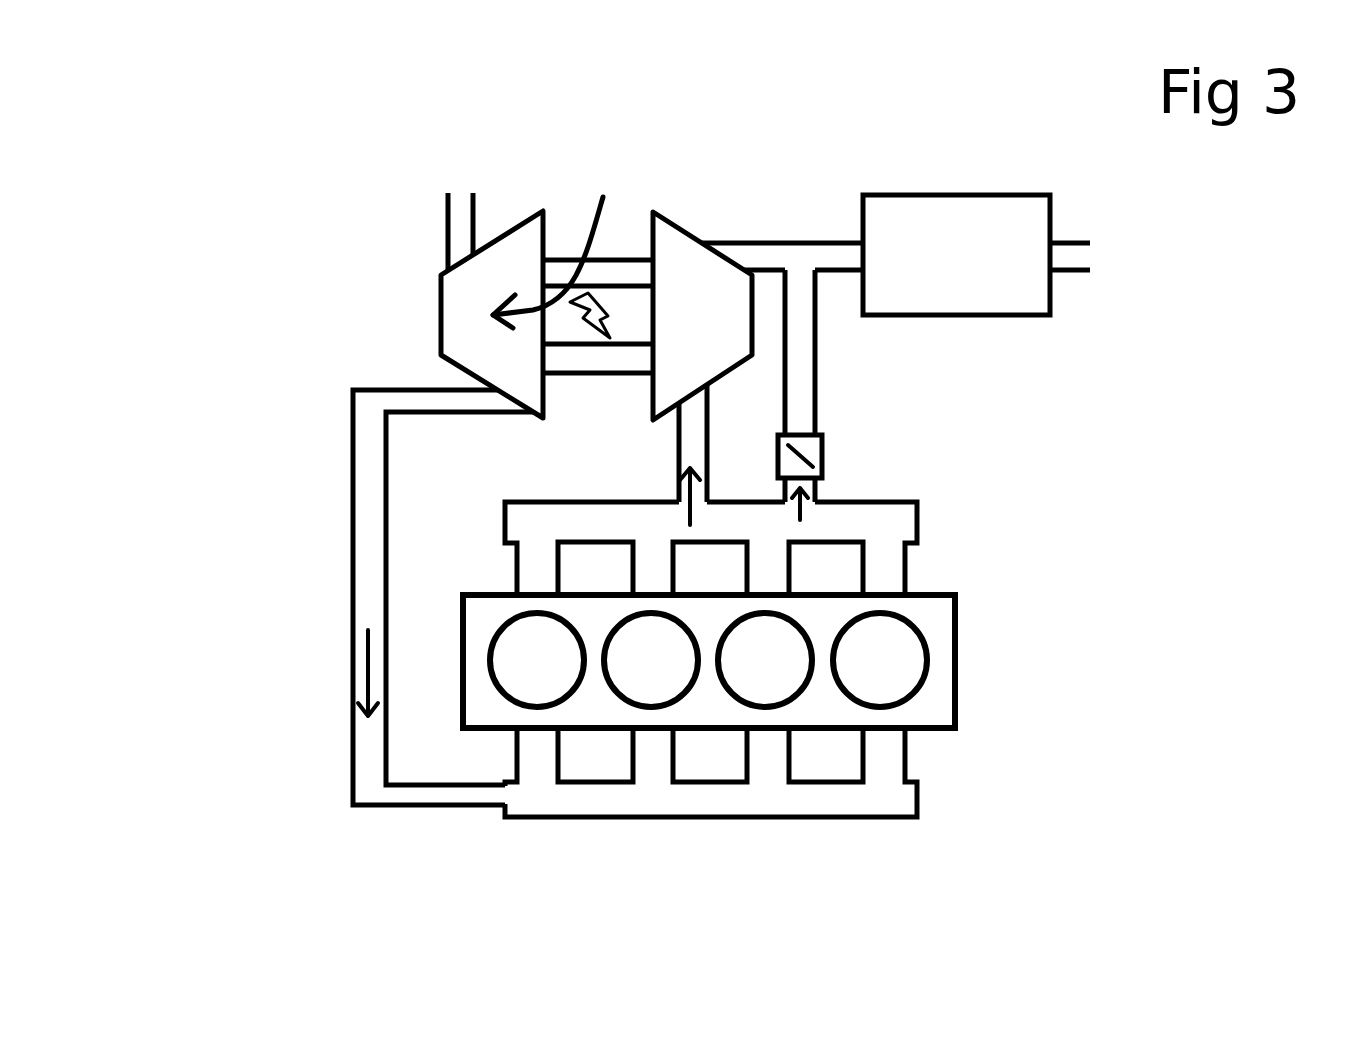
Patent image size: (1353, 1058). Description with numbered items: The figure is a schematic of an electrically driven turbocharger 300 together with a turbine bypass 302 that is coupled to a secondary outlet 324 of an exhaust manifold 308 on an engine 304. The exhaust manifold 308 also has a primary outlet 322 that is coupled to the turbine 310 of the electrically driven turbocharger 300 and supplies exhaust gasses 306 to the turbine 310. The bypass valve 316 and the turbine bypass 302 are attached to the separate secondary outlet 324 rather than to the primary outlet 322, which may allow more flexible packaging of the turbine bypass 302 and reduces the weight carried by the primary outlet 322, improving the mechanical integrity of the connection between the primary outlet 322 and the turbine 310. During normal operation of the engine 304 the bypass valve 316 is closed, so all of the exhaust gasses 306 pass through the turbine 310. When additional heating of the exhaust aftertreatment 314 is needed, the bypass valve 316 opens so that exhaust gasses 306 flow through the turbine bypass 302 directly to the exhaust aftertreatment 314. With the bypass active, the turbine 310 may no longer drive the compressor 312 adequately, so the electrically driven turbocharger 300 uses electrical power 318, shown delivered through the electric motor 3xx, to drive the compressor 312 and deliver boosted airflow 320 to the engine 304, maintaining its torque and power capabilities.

The electrically driven turbocharger 300 is at (328, 166).
The turbine bypass 302 is at (815, 323).
The engine 304 is at (707, 710).
The exhaust gasses 306 is at (692, 512).
The exhaust manifold 308 is at (887, 550).
The turbine 310 is at (706, 273).
The compressor 312 is at (505, 230).
The exhaust aftertreatment 314 is at (972, 210).
The bypass valve 316 is at (789, 445).
The electrical power 318 is at (513, 300).
The boosted airflow 320 is at (365, 655).
The primary outlet 322 is at (662, 486).
The secondary outlet 324 is at (826, 486).
The electric motor 3xx is at (620, 305).